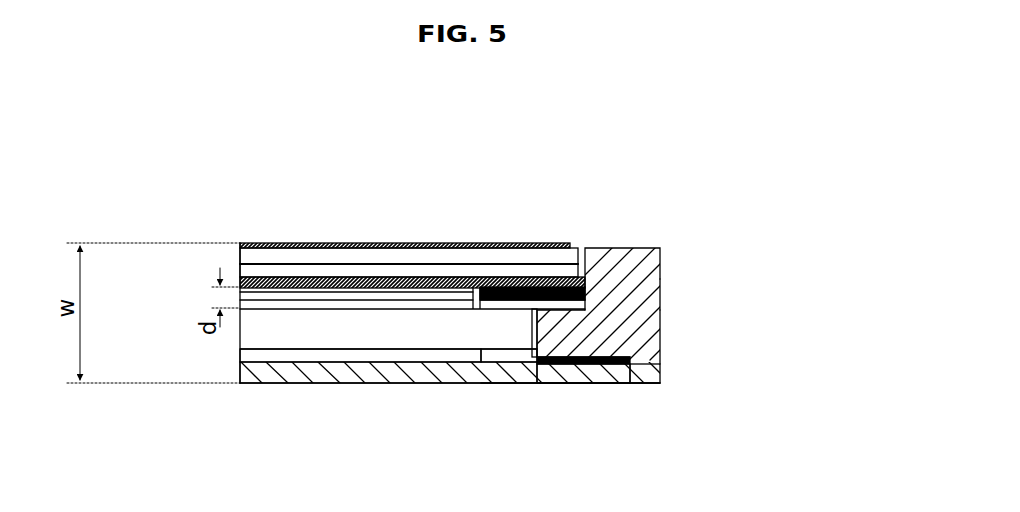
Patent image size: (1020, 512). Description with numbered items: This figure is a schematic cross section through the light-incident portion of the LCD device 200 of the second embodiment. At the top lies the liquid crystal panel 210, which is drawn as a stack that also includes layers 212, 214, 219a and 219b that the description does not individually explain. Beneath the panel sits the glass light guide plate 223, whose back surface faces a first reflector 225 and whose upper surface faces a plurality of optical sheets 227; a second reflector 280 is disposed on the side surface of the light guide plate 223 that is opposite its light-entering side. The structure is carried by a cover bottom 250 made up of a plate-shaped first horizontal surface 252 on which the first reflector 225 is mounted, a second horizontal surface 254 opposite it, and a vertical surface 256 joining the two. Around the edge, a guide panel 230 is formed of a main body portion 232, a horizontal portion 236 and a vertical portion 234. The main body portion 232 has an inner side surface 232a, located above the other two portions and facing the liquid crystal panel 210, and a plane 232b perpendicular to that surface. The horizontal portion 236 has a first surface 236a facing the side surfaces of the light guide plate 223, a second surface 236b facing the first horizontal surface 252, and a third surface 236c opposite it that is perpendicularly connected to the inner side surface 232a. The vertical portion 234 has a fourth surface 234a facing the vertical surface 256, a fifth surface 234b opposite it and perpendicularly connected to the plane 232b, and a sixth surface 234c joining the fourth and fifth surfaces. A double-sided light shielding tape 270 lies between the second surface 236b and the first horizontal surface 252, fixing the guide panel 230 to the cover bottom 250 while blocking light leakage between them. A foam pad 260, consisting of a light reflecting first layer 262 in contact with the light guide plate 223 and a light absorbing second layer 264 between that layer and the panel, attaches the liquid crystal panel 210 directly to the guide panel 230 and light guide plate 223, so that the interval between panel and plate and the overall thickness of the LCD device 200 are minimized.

The LCD device 200 is at (445, 118).
The liquid crystal panel 210 is at (328, 226).
The substrate 212 is at (240, 268).
The encapsulation layer 214 is at (240, 258).
The lower polarizing/adhesive layer 219a is at (240, 285).
The upper cover layer 219b is at (240, 245).
The light guide plate 223 is at (292, 352).
The first reflector 225 is at (252, 372).
The optical sheets 227 is at (356, 314).
The guide panel 230 is at (696, 313).
The main body portion 232 is at (695, 246).
The inner side surface 232a is at (578, 249).
The plane 232b is at (590, 252).
The vertical portion 234 is at (673, 415).
The fourth surface 234a is at (650, 383).
The fifth surface 234b is at (658, 369).
The sixth surface 234c is at (610, 383).
The horizontal portion 236 is at (671, 318).
The first surface 236a is at (652, 320).
The second surface 236b is at (636, 357).
The third surface 236c is at (655, 281).
The cover bottom 250 is at (555, 438).
The first horizontal surface 252 is at (573, 375).
The second horizontal surface 254 is at (521, 375).
The vertical surface 256 is at (608, 378).
The foam pad 260 is at (412, 232).
The first layer 262 is at (490, 278).
The second layer 264 is at (565, 263).
The light shielding tape 270 is at (530, 328).
The second reflector 280 is at (490, 352).